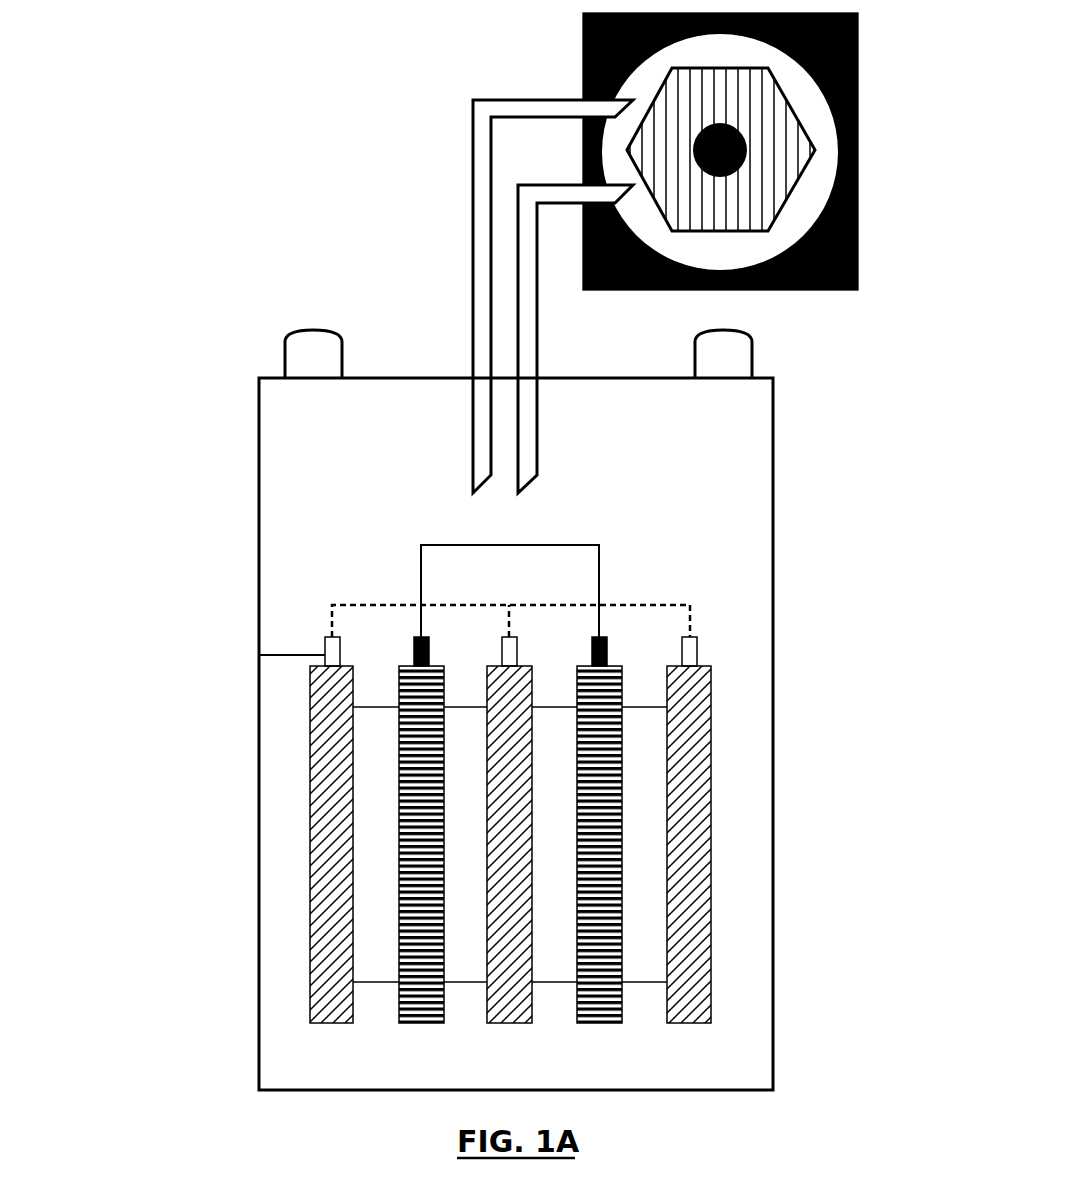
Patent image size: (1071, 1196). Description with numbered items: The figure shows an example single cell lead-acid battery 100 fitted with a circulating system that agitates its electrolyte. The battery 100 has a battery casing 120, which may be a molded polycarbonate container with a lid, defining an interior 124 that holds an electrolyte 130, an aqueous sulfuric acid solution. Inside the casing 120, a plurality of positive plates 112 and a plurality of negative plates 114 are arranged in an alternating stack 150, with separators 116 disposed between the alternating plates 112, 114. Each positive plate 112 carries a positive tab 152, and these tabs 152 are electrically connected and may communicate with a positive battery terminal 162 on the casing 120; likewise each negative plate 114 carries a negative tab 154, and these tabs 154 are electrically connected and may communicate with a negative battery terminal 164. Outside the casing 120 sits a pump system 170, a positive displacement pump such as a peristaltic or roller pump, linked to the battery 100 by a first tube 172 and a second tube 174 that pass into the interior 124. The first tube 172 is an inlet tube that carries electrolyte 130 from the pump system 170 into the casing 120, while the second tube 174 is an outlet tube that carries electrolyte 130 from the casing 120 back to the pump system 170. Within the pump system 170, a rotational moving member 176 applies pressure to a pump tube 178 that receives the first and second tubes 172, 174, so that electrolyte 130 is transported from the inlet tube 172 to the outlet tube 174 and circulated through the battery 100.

The lead-acid battery 100 is at (160, 340).
The positive plates 112 is at (310, 837).
The negative plates 114 is at (600, 1023).
The separators 116 is at (377, 983).
The battery casing 120 is at (774, 737).
The interior 124 is at (303, 508).
The electrolyte 130 is at (376, 469).
The alternating stack 150 is at (455, 808).
The positive tab 152 is at (259, 655).
The negative tab 154 is at (607, 650).
The positive battery terminal 162 is at (285, 337).
The negative battery terminal 164 is at (752, 338).
The pump system 170 is at (858, 48).
The first tube 172 is at (472, 213).
The second tube 174 is at (537, 340).
The moving member 176 is at (815, 150).
The pump tube 178 is at (858, 240).